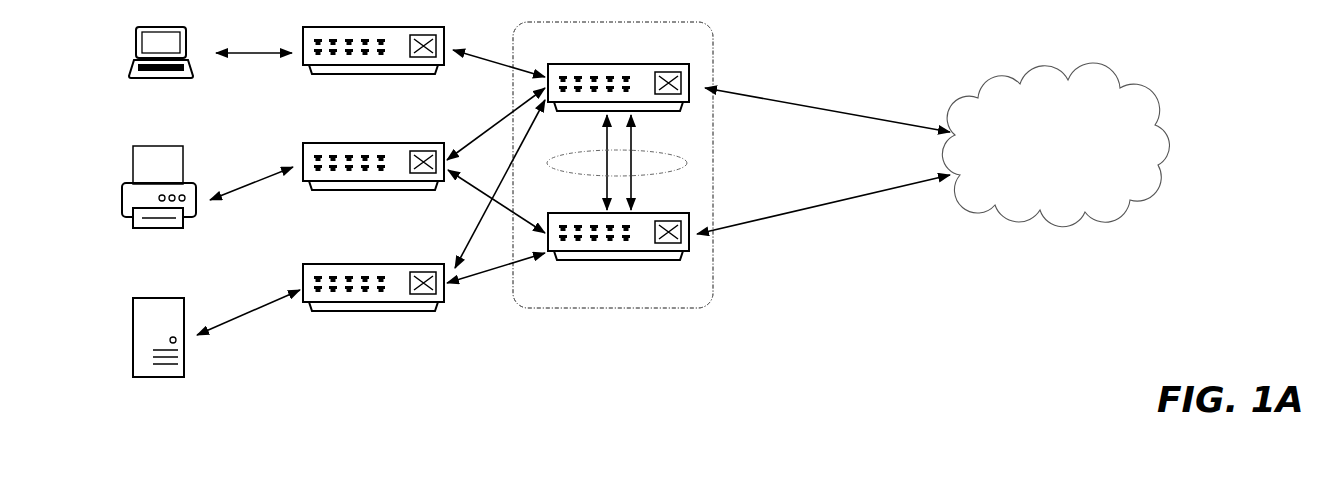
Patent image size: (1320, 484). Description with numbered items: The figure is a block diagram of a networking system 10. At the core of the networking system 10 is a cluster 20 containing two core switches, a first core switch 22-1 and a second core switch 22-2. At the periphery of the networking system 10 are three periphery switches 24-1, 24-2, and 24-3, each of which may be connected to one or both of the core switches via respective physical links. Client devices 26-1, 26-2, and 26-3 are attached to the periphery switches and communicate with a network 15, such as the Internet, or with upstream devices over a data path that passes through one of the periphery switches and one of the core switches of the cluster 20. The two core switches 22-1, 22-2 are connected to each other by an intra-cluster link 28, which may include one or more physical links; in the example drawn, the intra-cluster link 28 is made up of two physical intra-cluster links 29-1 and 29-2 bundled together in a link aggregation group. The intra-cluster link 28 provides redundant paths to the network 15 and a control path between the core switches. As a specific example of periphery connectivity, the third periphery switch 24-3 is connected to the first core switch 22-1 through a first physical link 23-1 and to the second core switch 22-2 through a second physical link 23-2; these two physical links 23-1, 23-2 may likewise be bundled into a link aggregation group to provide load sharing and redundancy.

The networking system 10 is at (1259, 47).
The network 15 is at (1055, 145).
The cluster 20 is at (706, 303).
The first core switch 22-1 is at (612, 64).
The second core switch 22-2 is at (612, 262).
The first physical link 23-1 is at (478, 224).
The second physical link 23-2 is at (478, 274).
The first periphery switch 24-1 is at (373, 69).
The second periphery switch 24-2 is at (373, 186).
The third periphery switch 24-3 is at (373, 308).
The client device 26-1 is at (161, 67).
The client device 26-2 is at (159, 206).
The client device 26-3 is at (158, 353).
The intra-cluster link 28 is at (687, 163).
The first physical intra-cluster link 29-1 is at (700, 140).
The second physical intra-cluster link 29-2 is at (700, 197).